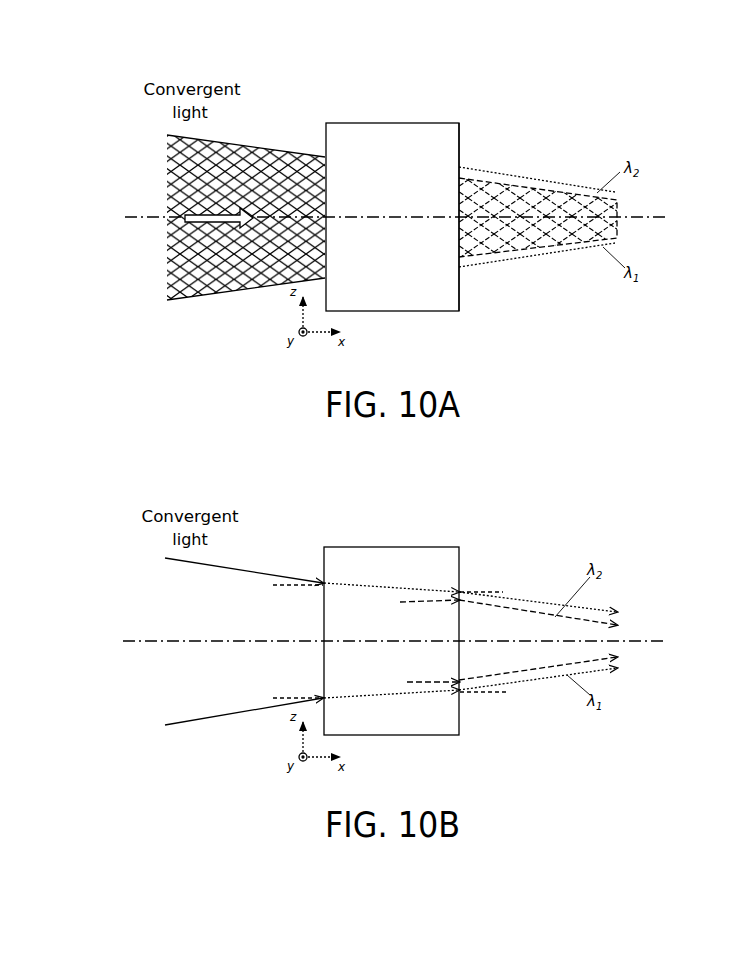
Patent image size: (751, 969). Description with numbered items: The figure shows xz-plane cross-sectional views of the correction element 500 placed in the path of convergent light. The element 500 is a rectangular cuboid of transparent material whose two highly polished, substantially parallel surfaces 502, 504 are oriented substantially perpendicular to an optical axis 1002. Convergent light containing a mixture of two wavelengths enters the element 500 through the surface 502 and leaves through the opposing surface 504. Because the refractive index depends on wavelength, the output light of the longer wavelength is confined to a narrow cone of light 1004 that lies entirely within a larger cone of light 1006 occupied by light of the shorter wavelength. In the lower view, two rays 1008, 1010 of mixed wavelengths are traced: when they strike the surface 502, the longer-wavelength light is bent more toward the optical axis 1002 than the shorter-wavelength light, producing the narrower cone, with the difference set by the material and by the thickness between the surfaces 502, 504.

In FIG. 10A, the correction element 500 is at (428, 135).
In FIG. 10A, the surface 502 is at (323, 157).
In FIG. 10A, the opposing surface 504 is at (462, 140).
In FIG. 10A, the optical axis 1002 is at (150, 217).
In FIG. 10B, the optical axis 1002 is at (175, 643).
In FIG. 10A, the narrow cone of light 1004 is at (615, 212).
In FIG. 10A, the larger cone of light 1006 is at (576, 247).
In FIG. 10B, the ray 1008 is at (253, 568).
In FIG. 10B, the ray 1010 is at (232, 715).